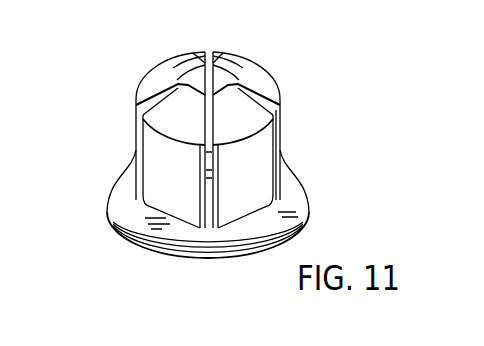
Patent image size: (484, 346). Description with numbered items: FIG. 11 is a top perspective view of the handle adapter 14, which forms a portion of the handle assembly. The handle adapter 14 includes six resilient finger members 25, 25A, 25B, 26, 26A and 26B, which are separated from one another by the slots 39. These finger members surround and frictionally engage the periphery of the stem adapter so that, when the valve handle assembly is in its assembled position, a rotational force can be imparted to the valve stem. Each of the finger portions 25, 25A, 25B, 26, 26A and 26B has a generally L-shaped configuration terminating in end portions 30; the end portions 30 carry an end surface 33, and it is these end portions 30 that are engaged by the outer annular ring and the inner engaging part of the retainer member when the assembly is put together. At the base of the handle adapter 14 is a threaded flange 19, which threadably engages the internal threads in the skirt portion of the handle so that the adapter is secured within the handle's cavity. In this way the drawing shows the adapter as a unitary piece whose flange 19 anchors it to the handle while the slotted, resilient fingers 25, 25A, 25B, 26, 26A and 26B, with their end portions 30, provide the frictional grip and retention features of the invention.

The handle adapter 14 is at (147, 188).
The threaded flange 19 is at (297, 188).
The resilient finger member 25 is at (276, 103).
The resilient finger member 25A is at (250, 153).
The resilient finger member 25B is at (221, 53).
The resilient finger member 26 is at (136, 105).
The resilient finger member 26A is at (160, 166).
The resilient finger member 26B is at (197, 52).
The end portions 30 is at (166, 47).
The end surface 33 is at (243, 63).
The slots 39 is at (207, 215).